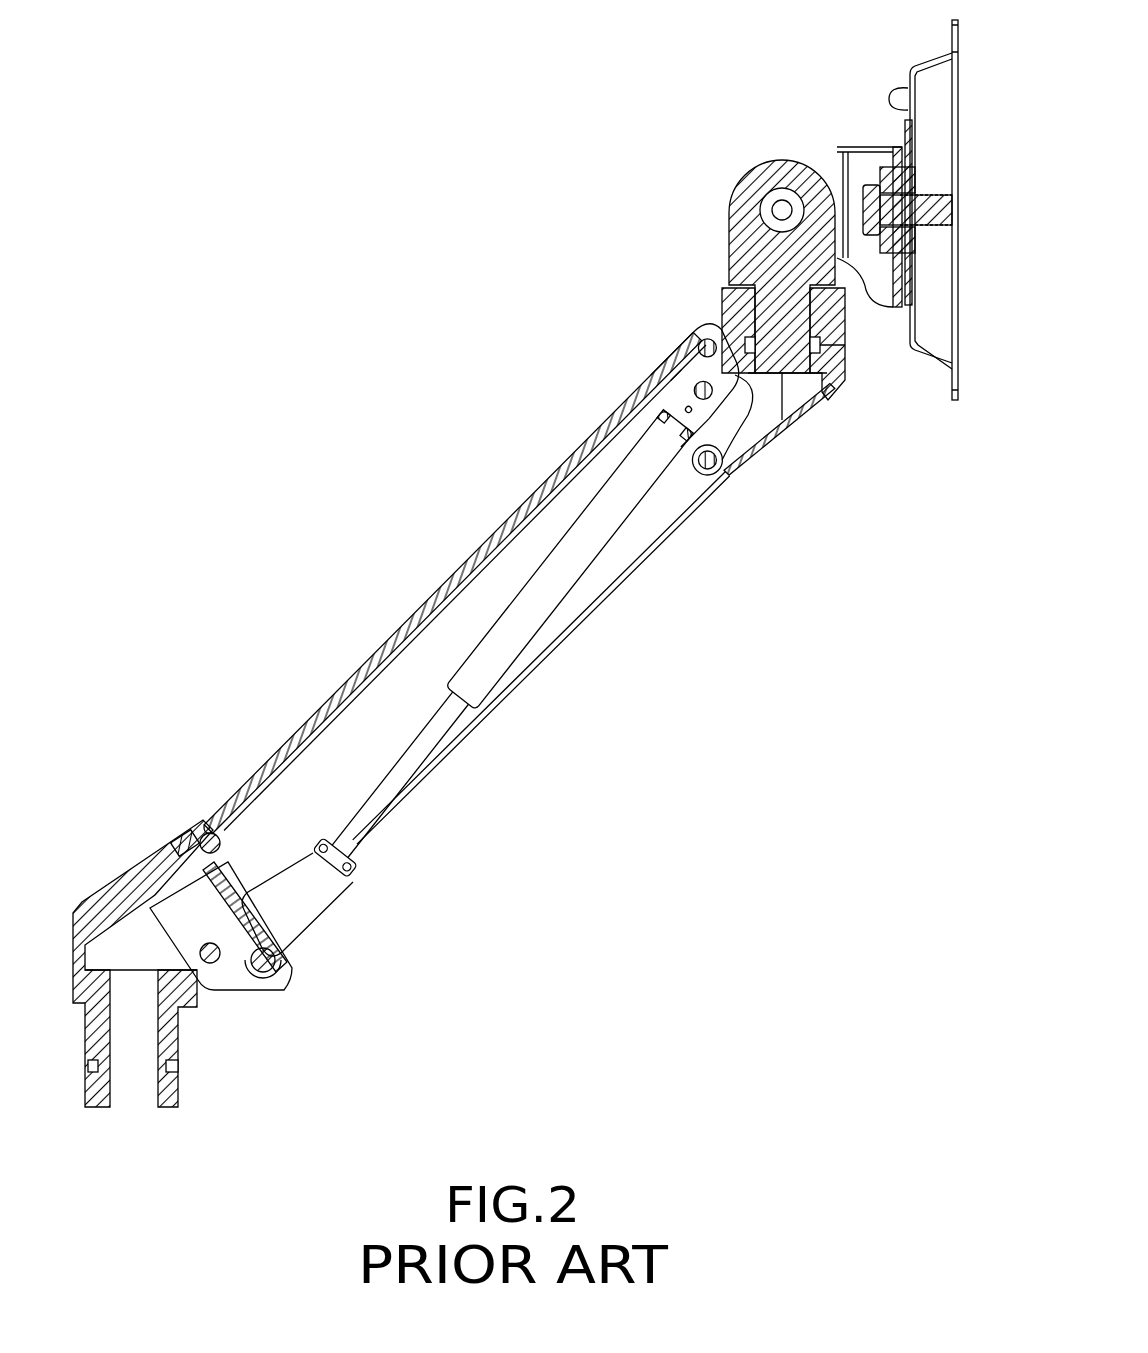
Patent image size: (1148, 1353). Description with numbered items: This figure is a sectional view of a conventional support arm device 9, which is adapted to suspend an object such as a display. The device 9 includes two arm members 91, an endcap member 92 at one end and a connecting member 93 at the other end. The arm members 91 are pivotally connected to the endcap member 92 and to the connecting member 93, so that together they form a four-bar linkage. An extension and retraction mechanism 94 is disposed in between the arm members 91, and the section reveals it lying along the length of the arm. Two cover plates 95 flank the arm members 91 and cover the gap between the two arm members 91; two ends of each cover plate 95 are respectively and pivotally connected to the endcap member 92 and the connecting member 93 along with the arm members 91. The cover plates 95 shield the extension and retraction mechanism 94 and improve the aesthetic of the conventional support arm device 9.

The support arm device 9 is at (598, 358).
The arm members 91 is at (512, 497).
The endcap member 92 is at (73, 910).
The connecting member 93 is at (722, 292).
The extension and retraction mechanism 94 is at (580, 590).
The cover plates 95 is at (250, 983).